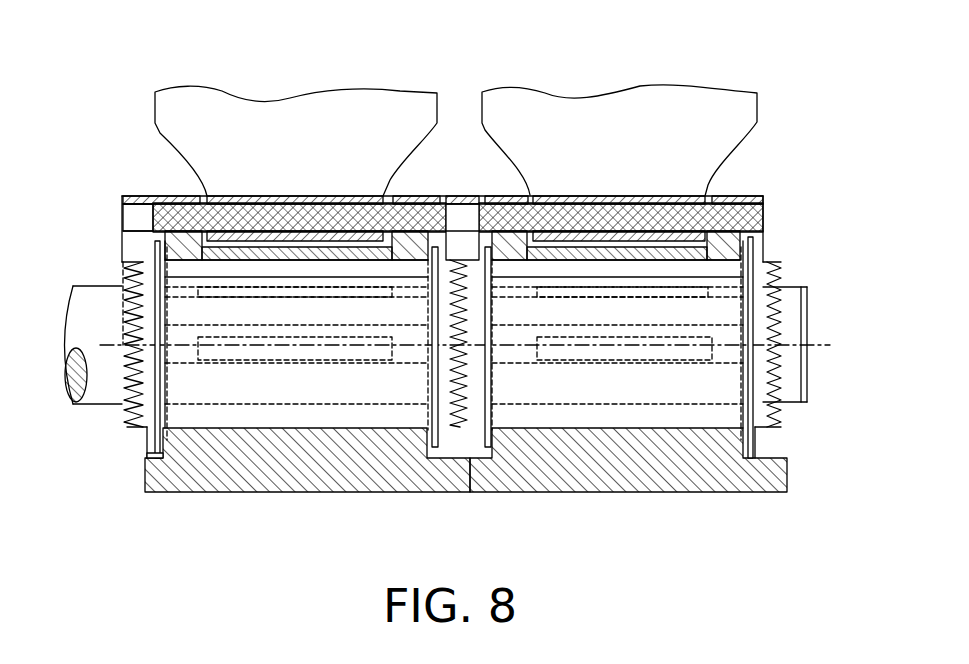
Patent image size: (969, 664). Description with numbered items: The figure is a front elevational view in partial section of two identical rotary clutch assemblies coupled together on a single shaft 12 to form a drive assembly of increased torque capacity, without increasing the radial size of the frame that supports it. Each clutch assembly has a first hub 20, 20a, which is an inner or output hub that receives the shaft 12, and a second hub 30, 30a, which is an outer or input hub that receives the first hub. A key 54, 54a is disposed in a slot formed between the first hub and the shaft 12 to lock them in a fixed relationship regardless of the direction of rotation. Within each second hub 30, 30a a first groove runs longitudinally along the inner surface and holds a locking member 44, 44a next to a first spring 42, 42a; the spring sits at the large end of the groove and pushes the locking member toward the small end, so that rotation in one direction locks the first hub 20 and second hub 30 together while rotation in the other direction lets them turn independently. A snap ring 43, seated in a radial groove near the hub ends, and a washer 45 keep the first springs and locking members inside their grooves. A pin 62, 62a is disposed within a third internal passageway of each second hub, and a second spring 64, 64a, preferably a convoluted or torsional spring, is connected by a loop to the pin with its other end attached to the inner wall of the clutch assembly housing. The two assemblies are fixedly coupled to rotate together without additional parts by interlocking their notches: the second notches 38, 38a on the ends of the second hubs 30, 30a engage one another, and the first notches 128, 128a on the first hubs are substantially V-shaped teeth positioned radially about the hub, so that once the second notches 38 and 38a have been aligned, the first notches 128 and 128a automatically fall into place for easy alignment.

The shaft 12 is at (809, 400).
The first hub 20 is at (130, 430).
The first hub 20a is at (735, 412).
The second hub 30 is at (422, 493).
The second hub 30a is at (632, 493).
The second notch 38 is at (470, 348).
The second notch 38a is at (468, 345).
The first spring 42 is at (219, 362).
The first spring 42a is at (693, 366).
The snap ring 43 is at (148, 440).
The locking member 44 is at (213, 337).
The locking member 44a is at (717, 355).
The washer 45 is at (149, 462).
The key 54 is at (405, 262).
The key 54a is at (520, 195).
The pin 62 is at (153, 205).
The pin 62a is at (763, 213).
The second spring 64 is at (223, 91).
The second spring 64a is at (543, 93).
The first notch 128 is at (458, 418).
The first notch 128a is at (470, 412).